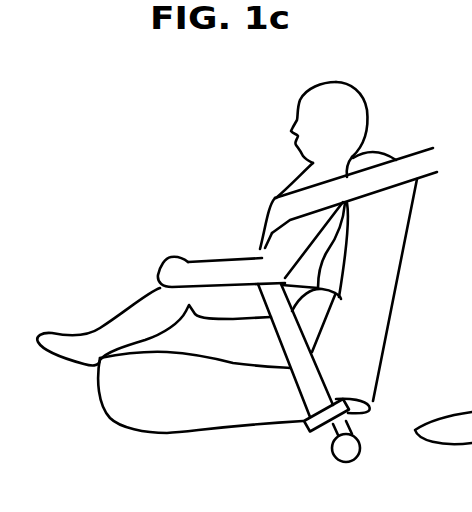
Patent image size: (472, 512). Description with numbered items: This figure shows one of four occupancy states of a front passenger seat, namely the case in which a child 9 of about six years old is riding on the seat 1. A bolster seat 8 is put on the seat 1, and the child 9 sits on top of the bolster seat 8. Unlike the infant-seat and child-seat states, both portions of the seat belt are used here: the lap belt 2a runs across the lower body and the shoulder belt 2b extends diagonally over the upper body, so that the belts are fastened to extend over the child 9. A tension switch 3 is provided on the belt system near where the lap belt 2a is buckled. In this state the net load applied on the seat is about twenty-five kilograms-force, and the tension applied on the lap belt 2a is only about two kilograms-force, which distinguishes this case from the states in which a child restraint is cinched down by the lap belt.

The seat 1 is at (394, 155).
The lap belt 2a is at (328, 358).
The shoulder belt 2b is at (419, 170).
The tension switch 3 is at (304, 428).
The bolster seat 8 is at (237, 343).
The child 9 is at (296, 127).